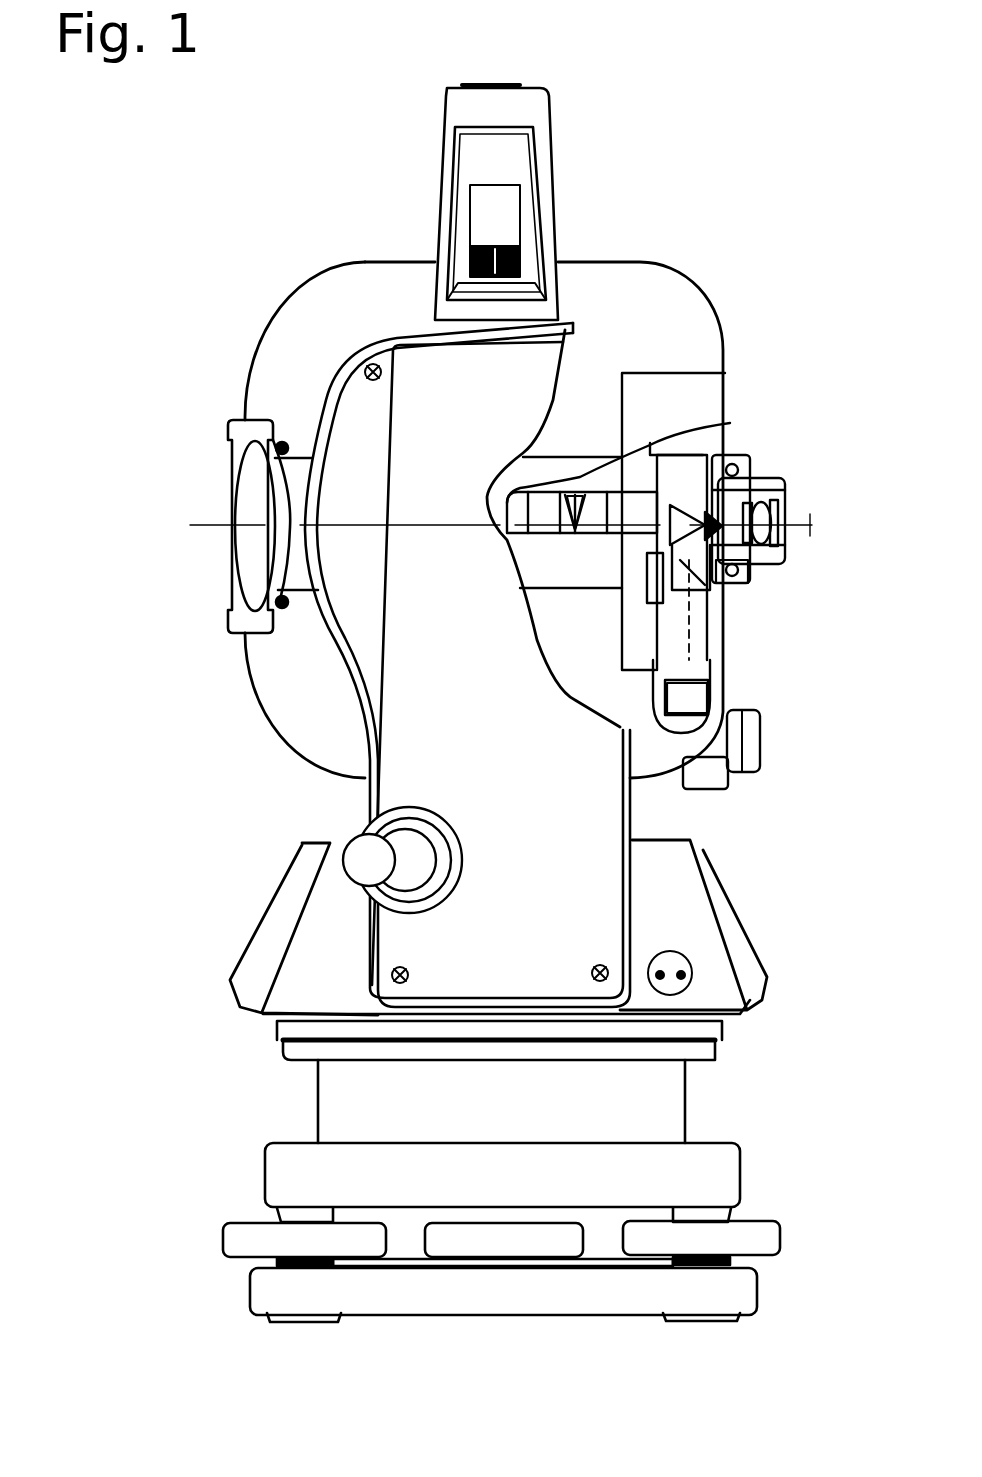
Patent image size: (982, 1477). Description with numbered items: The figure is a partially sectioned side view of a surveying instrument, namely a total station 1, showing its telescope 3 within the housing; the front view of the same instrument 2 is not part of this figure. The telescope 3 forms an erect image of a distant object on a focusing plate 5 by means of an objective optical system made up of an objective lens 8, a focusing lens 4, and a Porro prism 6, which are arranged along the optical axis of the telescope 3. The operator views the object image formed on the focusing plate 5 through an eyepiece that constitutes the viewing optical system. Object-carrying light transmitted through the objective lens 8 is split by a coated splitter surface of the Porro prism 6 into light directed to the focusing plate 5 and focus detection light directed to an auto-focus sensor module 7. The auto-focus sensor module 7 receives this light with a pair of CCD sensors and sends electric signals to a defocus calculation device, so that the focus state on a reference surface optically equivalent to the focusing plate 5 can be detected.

The total station 1 is at (568, 125).
The telescope 2 is at (347, 527).
The telescope 3 is at (668, 262).
The focusing lens 4 is at (580, 497).
The focusing plate 5 is at (750, 477).
The Porro prism 6 is at (727, 590).
The auto-focus sensor module 7 is at (688, 700).
The objective lens 8 is at (263, 445).